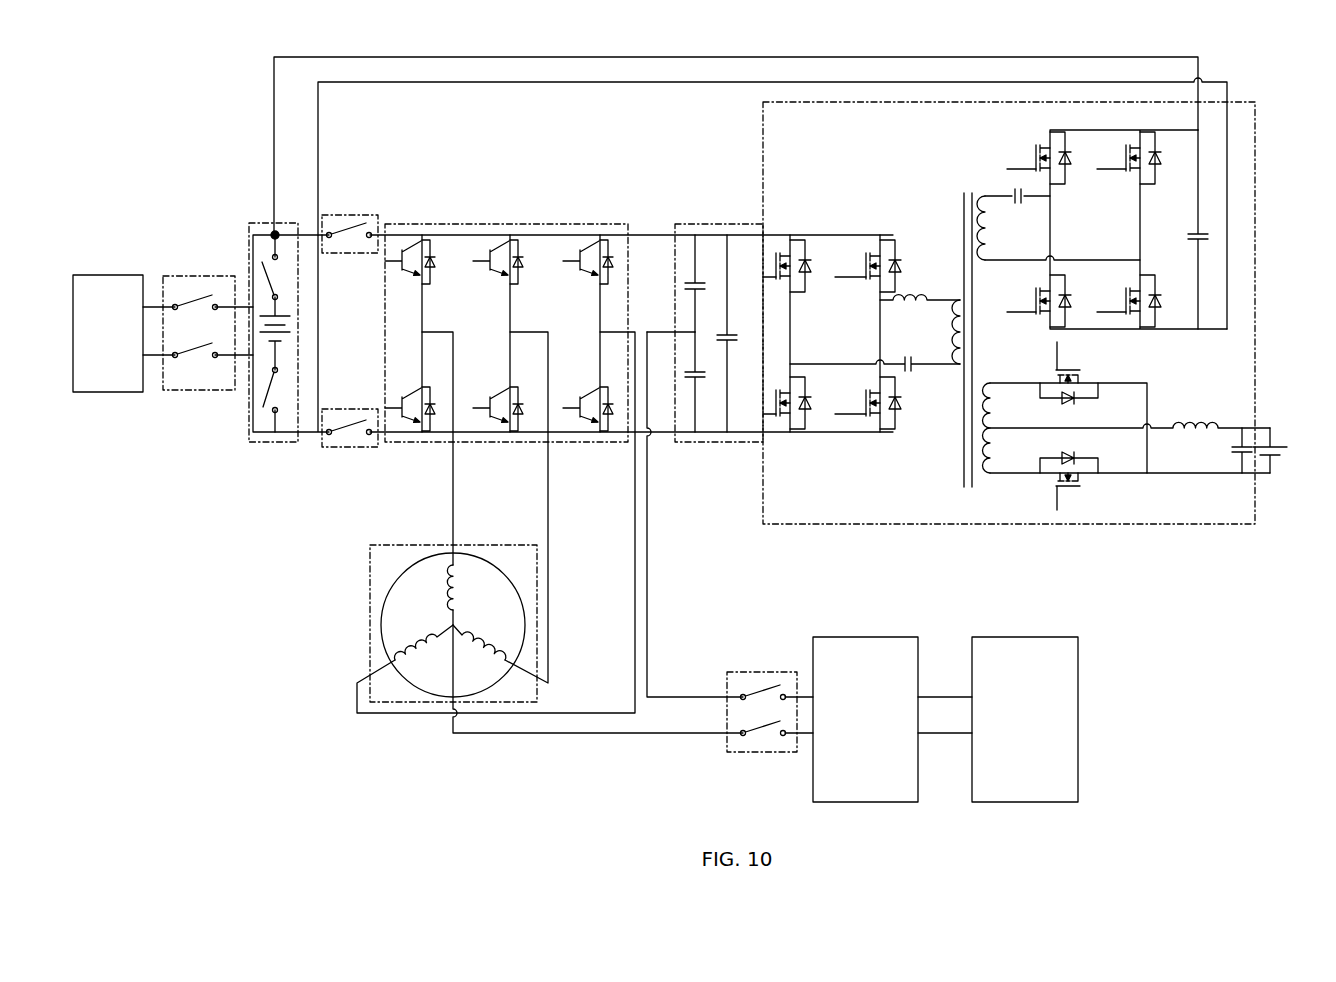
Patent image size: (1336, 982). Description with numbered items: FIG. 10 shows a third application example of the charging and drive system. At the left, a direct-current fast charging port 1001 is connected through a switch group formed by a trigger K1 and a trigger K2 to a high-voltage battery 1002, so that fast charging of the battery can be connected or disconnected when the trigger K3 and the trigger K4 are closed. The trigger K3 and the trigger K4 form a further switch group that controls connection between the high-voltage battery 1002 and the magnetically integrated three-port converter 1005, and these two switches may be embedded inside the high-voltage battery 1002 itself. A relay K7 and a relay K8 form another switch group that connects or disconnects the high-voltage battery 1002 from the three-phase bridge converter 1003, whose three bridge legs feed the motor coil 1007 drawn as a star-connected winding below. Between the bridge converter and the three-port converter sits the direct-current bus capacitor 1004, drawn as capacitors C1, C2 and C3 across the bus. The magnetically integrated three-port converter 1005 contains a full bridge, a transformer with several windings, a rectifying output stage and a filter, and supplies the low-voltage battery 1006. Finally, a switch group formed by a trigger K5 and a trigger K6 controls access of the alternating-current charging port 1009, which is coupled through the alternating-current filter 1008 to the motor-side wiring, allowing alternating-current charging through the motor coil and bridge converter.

The direct-current fast charging port 1001 is at (124, 333).
The high-voltage battery 1002 is at (258, 366).
The three-phase bridge converter 1003 is at (450, 225).
The direct-current bus capacitor 1004 is at (705, 296).
The magnetically integrated three-port converter 1005 is at (910, 513).
The low-voltage battery 1006 is at (1267, 442).
The motor coil 1007 is at (387, 573).
The alternating-current filter 1008 is at (892, 719).
The alternating-current charging port 1009 is at (1025, 719).
The trigger K1 is at (208, 320).
The trigger K2 is at (212, 386).
The trigger K3 is at (279, 277).
The trigger K4 is at (280, 390).
The trigger K5 is at (770, 697).
The trigger K6 is at (777, 753).
The relay K7 is at (350, 215).
The relay K8 is at (349, 413).
The capacitor C1 is at (684, 283).
The capacitor C2 is at (679, 382).
The capacitor C3 is at (736, 333).